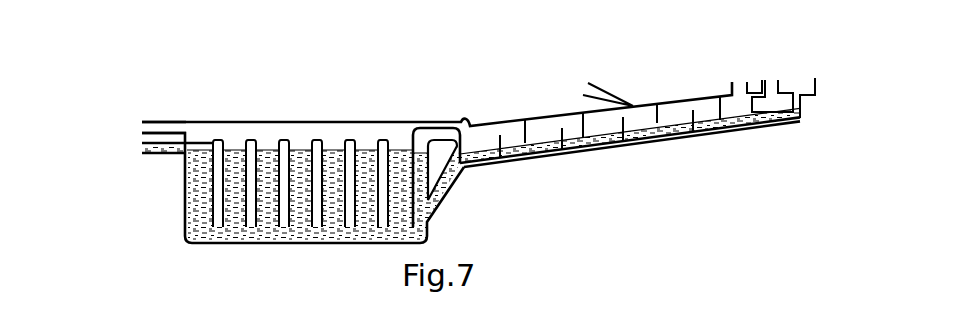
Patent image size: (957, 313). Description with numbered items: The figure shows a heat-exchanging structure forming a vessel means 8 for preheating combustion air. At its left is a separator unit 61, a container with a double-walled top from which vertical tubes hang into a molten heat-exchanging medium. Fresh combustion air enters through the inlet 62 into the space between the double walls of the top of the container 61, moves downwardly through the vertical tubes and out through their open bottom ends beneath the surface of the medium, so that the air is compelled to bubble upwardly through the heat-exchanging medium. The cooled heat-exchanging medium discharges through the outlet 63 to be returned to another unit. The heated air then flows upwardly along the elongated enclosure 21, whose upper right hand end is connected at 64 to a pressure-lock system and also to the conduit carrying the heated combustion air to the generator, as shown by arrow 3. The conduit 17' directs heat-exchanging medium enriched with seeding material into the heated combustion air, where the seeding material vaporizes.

The vessel means 8 is at (680, 85).
The separator unit 61 is at (313, 271).
The inlet 62 is at (140, 127).
The outlet 63 is at (142, 149).
The conduit 17' is at (595, 96).
The elongated enclosure 21 is at (623, 177).
The arrow 3 is at (740, 52).
The connection to pressure-lock system 64 is at (783, 88).